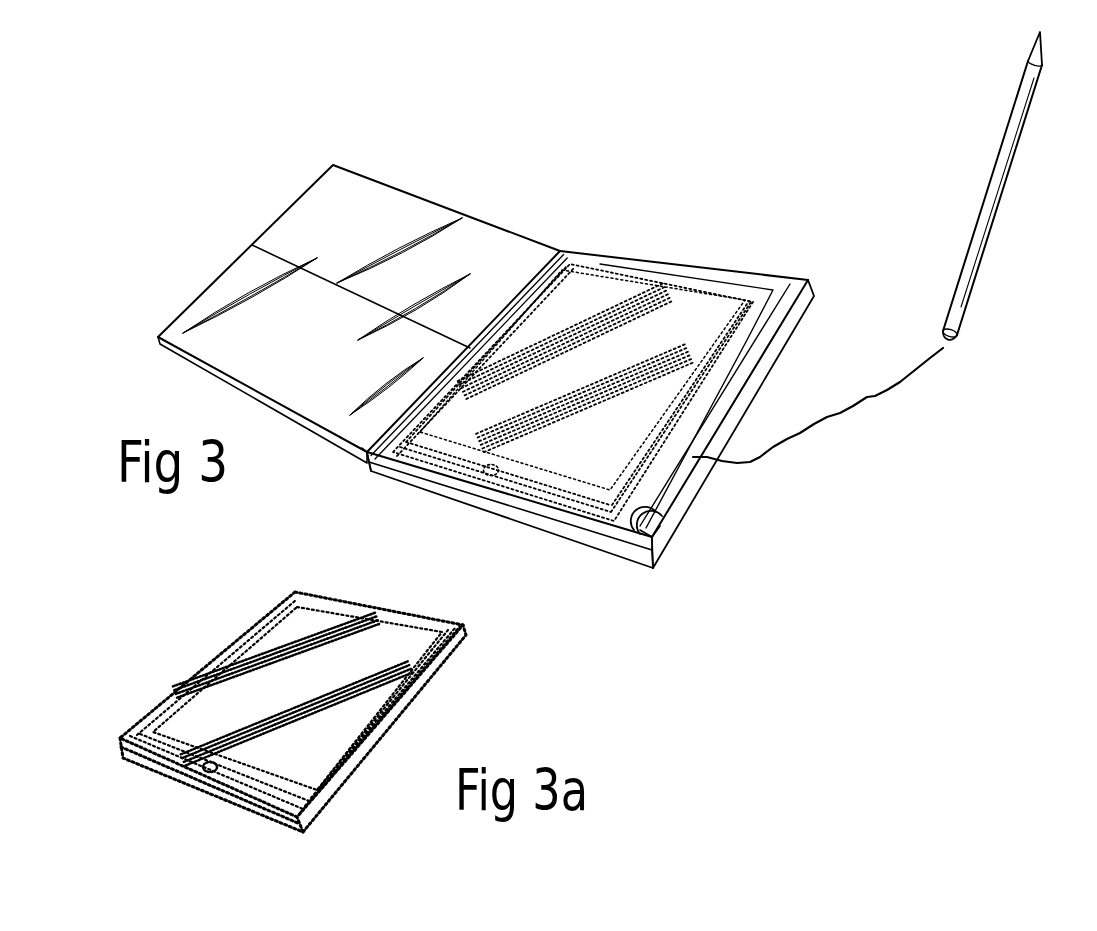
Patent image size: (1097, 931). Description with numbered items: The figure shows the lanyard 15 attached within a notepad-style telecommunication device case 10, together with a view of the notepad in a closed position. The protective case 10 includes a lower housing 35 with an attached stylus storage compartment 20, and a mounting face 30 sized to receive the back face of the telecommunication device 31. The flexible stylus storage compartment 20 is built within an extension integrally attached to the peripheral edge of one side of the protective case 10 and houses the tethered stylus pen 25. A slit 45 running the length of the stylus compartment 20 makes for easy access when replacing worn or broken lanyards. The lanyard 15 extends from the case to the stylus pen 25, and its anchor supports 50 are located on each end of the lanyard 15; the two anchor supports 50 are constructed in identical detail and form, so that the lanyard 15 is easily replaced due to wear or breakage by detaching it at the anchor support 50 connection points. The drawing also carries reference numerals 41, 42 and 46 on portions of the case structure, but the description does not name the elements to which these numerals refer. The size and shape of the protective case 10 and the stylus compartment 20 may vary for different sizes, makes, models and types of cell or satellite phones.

The telecommunication device case 10 is at (498, 195).
The lanyard 15 is at (870, 397).
The stylus storage compartment 20 is at (780, 337).
The stylus pen 25 is at (1017, 100).
The mounting face 30 is at (713, 308).
The telecommunication device 31 is at (655, 263).
The lower housing 35 is at (512, 500).
The inner rim of base 41 is at (762, 277).
The cover 42 is at (312, 228).
The slit 45 is at (365, 460).
The bottom edge of base 46 is at (617, 540).
The lanyard anchor support 50 is at (793, 303).